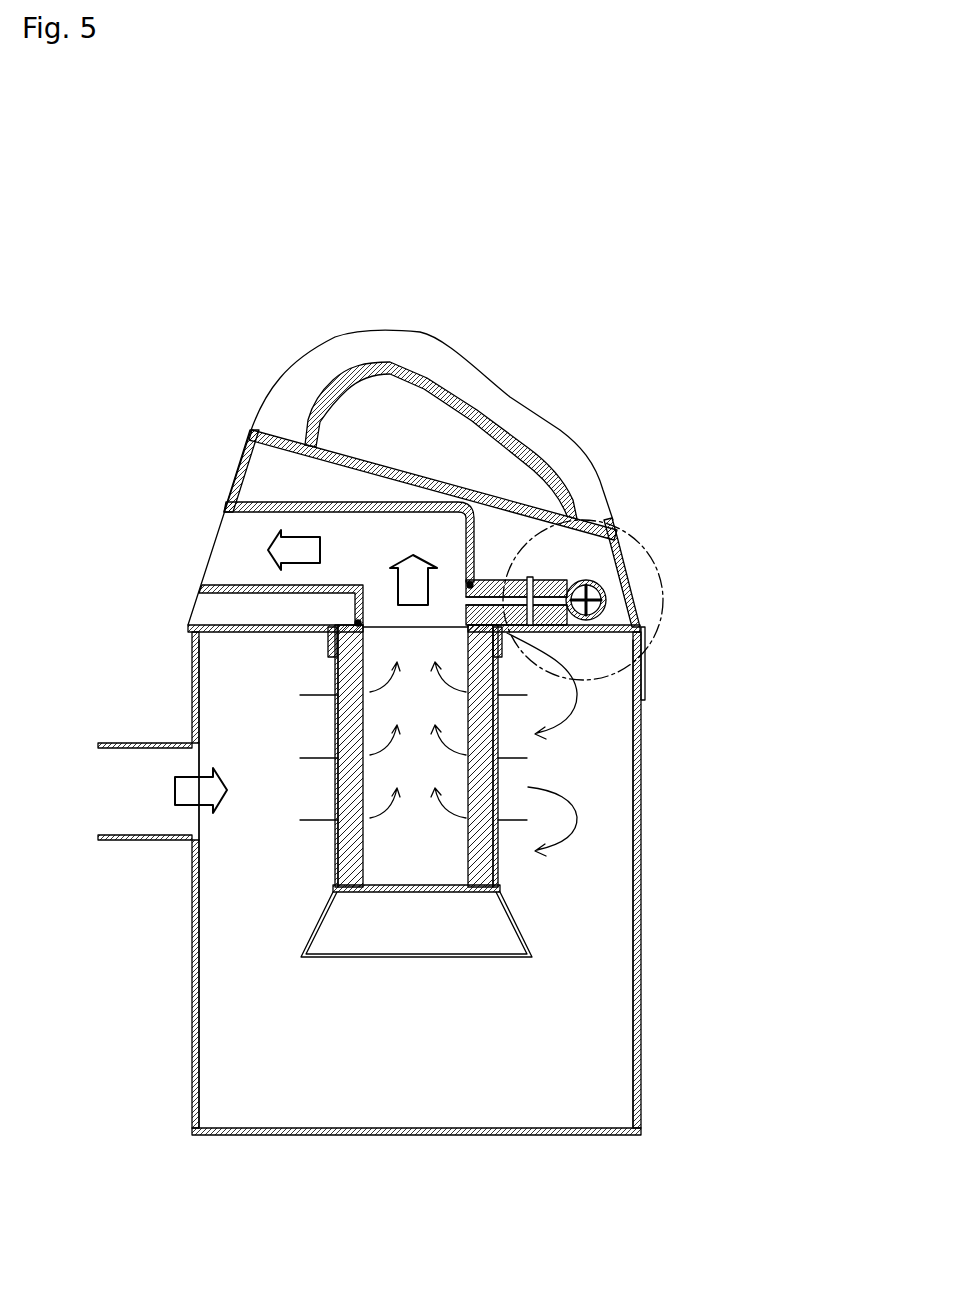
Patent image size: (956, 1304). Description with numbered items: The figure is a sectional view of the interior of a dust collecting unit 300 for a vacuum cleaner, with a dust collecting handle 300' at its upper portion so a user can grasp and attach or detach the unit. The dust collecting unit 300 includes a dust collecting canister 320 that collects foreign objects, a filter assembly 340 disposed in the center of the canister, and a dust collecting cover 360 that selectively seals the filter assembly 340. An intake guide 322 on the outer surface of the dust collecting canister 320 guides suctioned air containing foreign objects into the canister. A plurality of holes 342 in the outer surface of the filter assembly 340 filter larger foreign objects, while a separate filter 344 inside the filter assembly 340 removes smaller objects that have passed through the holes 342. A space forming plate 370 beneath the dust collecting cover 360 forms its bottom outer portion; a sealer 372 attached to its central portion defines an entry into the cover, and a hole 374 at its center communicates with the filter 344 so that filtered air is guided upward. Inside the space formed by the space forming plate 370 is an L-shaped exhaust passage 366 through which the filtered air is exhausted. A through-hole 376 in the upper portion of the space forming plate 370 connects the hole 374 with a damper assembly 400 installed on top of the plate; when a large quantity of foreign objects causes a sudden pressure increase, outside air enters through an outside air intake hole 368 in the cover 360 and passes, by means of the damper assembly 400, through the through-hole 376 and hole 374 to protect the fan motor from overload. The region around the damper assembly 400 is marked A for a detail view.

The dust collecting unit 300 is at (460, 703).
The dust collecting handle 300' is at (414, 449).
The dust collecting cover 360 is at (283, 438).
The exhaust passage 366 is at (230, 538).
The sealer 372 is at (358, 623).
The hole 374 is at (333, 654).
The space forming plate 370 is at (643, 630).
The outside air intake hole 368 is at (632, 587).
The through-hole 376 is at (530, 672).
The damper assembly 400 is at (605, 578).
The detail region A is at (627, 527).
The holes 342 is at (498, 772).
The filter 344 is at (337, 870).
The filter assembly 340 is at (506, 867).
The dust collecting canister 320 is at (635, 998).
The intake guide 322 is at (120, 840).